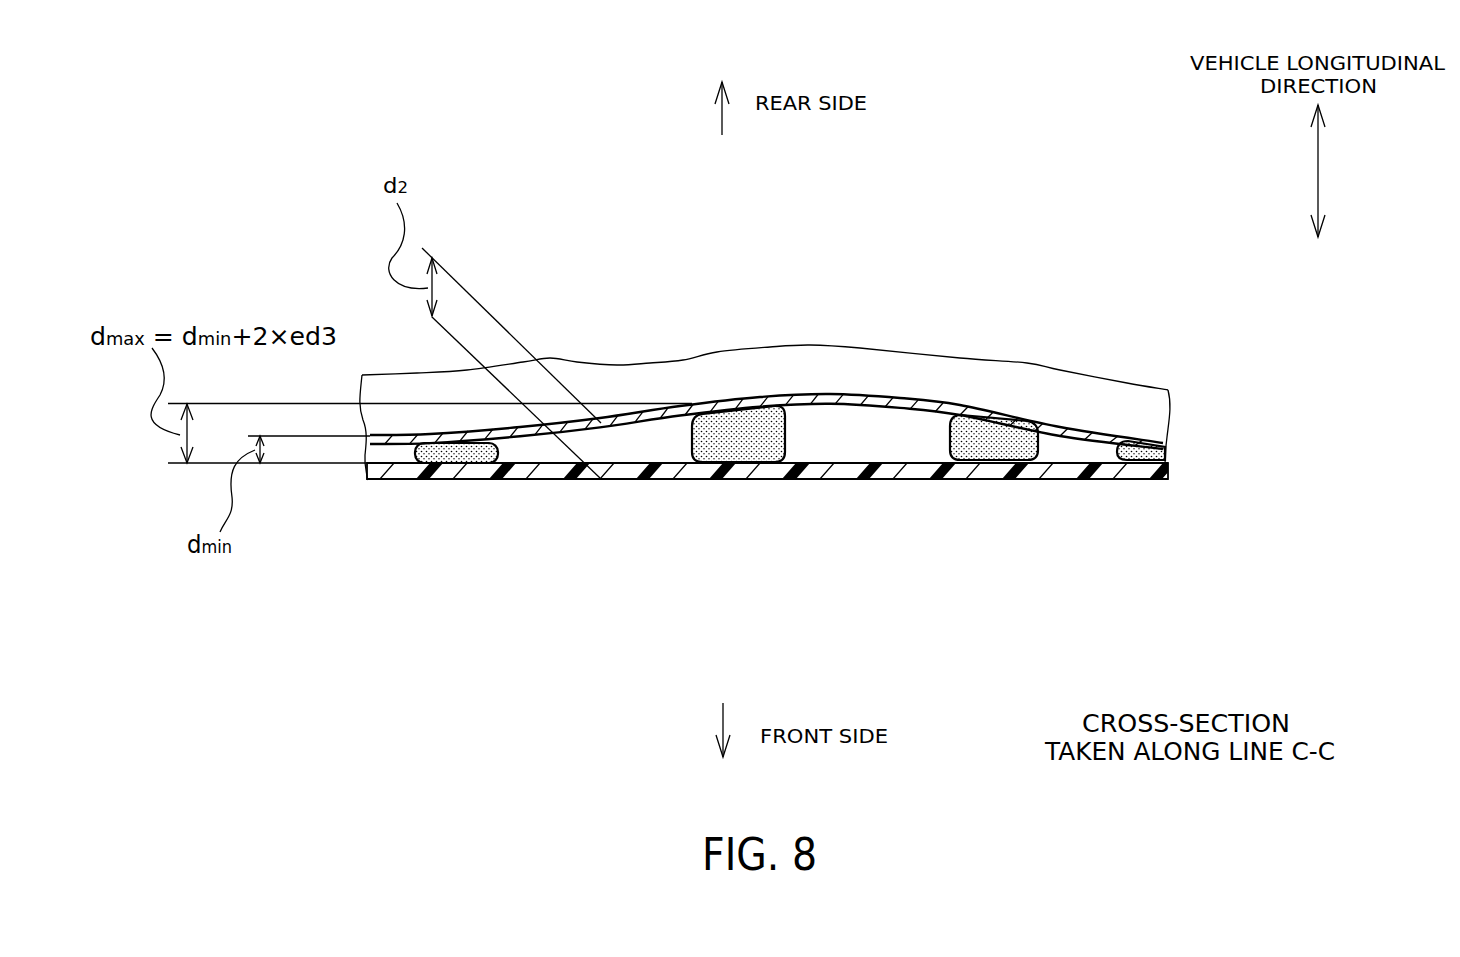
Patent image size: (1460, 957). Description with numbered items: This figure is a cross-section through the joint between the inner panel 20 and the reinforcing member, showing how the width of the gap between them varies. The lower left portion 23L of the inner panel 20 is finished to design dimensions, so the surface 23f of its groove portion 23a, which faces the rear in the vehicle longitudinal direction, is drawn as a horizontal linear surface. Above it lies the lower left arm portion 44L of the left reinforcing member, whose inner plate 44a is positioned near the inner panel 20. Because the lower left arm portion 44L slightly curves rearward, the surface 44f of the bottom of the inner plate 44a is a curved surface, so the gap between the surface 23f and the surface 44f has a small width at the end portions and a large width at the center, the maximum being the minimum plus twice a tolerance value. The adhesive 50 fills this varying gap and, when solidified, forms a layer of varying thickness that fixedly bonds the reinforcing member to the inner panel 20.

The lower left arm portion 44L is at (970, 358).
The inner plate 44a is at (1027, 362).
The surface of the bottom portion of the inner plate 44f is at (842, 407).
The adhesive 50 is at (785, 437).
The inner panel 20 is at (771, 548).
The lower left portion of the inner panel 23L is at (771, 517).
The surface of the groove portion 23f is at (889, 462).
The groove portion 23a is at (1028, 480).